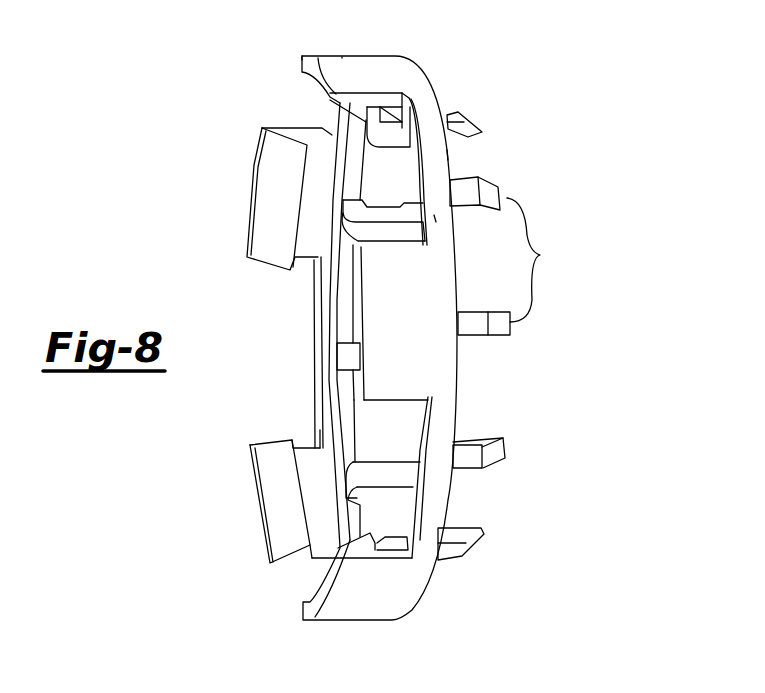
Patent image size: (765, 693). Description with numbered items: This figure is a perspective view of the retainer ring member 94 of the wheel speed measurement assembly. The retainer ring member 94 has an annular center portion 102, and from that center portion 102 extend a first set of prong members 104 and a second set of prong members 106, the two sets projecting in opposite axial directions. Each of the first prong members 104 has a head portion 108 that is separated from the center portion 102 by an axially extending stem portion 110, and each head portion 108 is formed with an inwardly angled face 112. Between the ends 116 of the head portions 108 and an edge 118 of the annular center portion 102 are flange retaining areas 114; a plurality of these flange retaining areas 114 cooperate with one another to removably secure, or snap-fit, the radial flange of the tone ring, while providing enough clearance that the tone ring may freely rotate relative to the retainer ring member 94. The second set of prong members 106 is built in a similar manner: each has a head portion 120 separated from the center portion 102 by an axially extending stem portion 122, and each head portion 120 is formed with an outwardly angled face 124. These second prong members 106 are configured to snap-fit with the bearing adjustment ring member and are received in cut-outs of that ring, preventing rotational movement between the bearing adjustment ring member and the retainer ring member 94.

The retainer ring member 94 is at (592, 140).
The annular center portion 102 is at (437, 215).
The first set of prong members 104 is at (418, 280).
The second set of prong members 106 is at (543, 260).
The head portions 108 is at (319, 34).
The stem portions 110 is at (361, 33).
The inwardly angled face 112 is at (274, 477).
The flange retaining areas 114 is at (312, 192).
The ends 116 is at (313, 127).
The edge 118 is at (340, 325).
The head portions 120 is at (494, 476).
The stem portions 122 is at (478, 432).
The outwardly angled face 124 is at (490, 190).